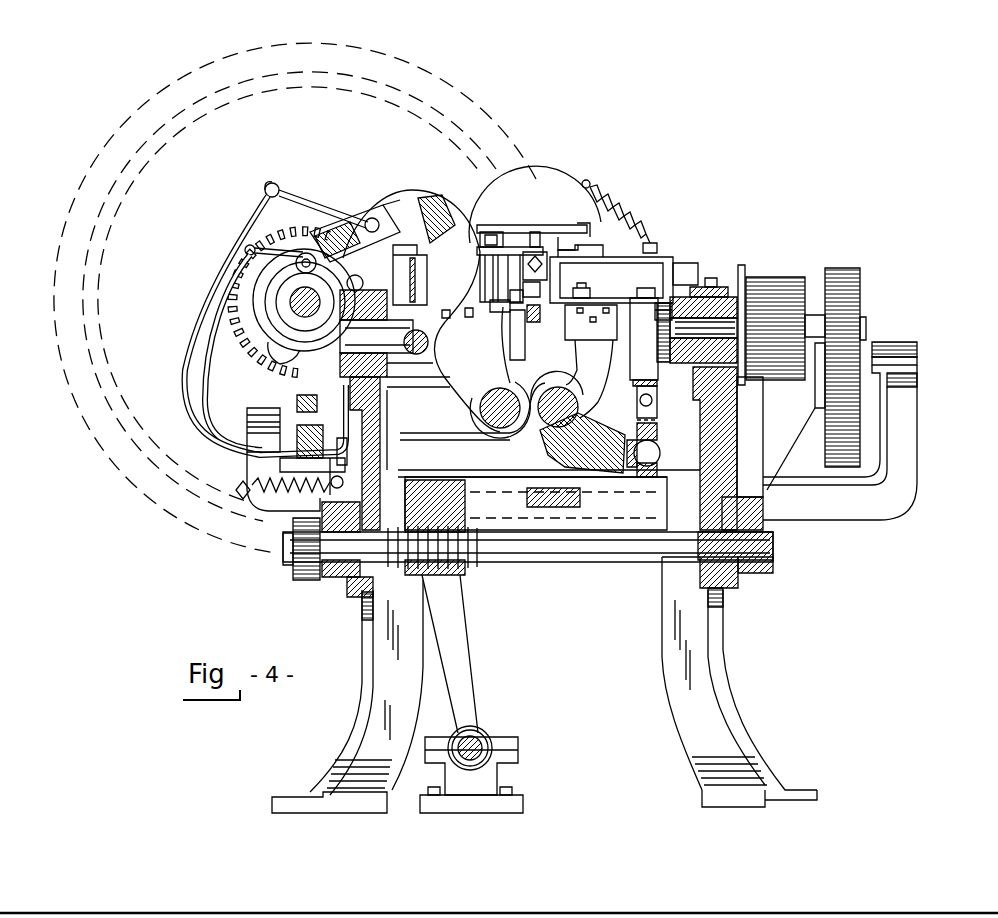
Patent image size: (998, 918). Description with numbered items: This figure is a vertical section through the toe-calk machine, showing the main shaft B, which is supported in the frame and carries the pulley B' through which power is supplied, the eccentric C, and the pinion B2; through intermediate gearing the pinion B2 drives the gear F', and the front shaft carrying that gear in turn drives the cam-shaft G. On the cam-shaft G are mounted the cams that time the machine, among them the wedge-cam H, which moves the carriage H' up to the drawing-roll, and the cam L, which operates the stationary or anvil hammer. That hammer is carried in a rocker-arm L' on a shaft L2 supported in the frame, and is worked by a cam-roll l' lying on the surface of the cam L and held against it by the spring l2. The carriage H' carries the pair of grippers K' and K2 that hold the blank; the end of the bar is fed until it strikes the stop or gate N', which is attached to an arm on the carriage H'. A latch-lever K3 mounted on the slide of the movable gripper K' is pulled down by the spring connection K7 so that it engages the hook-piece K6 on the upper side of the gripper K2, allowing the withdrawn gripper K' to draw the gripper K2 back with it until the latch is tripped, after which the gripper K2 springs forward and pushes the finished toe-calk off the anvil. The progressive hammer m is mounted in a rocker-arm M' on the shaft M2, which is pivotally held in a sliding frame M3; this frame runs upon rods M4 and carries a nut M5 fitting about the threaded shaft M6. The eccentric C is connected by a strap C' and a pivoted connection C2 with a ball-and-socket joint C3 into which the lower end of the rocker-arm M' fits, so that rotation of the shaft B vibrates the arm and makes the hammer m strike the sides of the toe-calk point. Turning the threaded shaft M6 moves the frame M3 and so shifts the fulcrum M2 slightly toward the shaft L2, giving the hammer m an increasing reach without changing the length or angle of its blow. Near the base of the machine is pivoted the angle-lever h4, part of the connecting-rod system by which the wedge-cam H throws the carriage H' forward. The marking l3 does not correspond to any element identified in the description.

The cam-shaft G is at (292, 306).
The cam L is at (298, 313).
The spring l2 is at (248, 249).
The cam-roll l' is at (276, 318).
The shaft L2 is at (467, 428).
The shaft M2 is at (588, 410).
The carriage H' is at (568, 373).
The rocker-arm M' is at (591, 338).
The sliding frame M3 is at (577, 443).
The latch-lever K3 is at (557, 225).
The stop or gate N' is at (510, 226).
The spring connection K7 is at (619, 216).
The hook-piece K6 is at (540, 290).
The gripper K2 is at (545, 312).
The progressive hammer m is at (568, 283).
The gripper K' is at (482, 276).
The rocker-arm L' is at (496, 277).
The link l3 is at (513, 308).
The wedge-cam H is at (496, 347).
The eccentric C is at (651, 326).
The strap C' is at (645, 381).
The pivoted connection C2 is at (652, 401).
The ball-and-socket joint C3 is at (659, 447).
The pulley B' is at (771, 319).
The main shaft B is at (853, 324).
The pinion B2 is at (860, 300).
The gear F' is at (853, 431).
The rods M4 is at (712, 490).
The nut M5 is at (518, 497).
The threaded shaft M6 is at (560, 555).
The angle-lever h4 is at (463, 661).